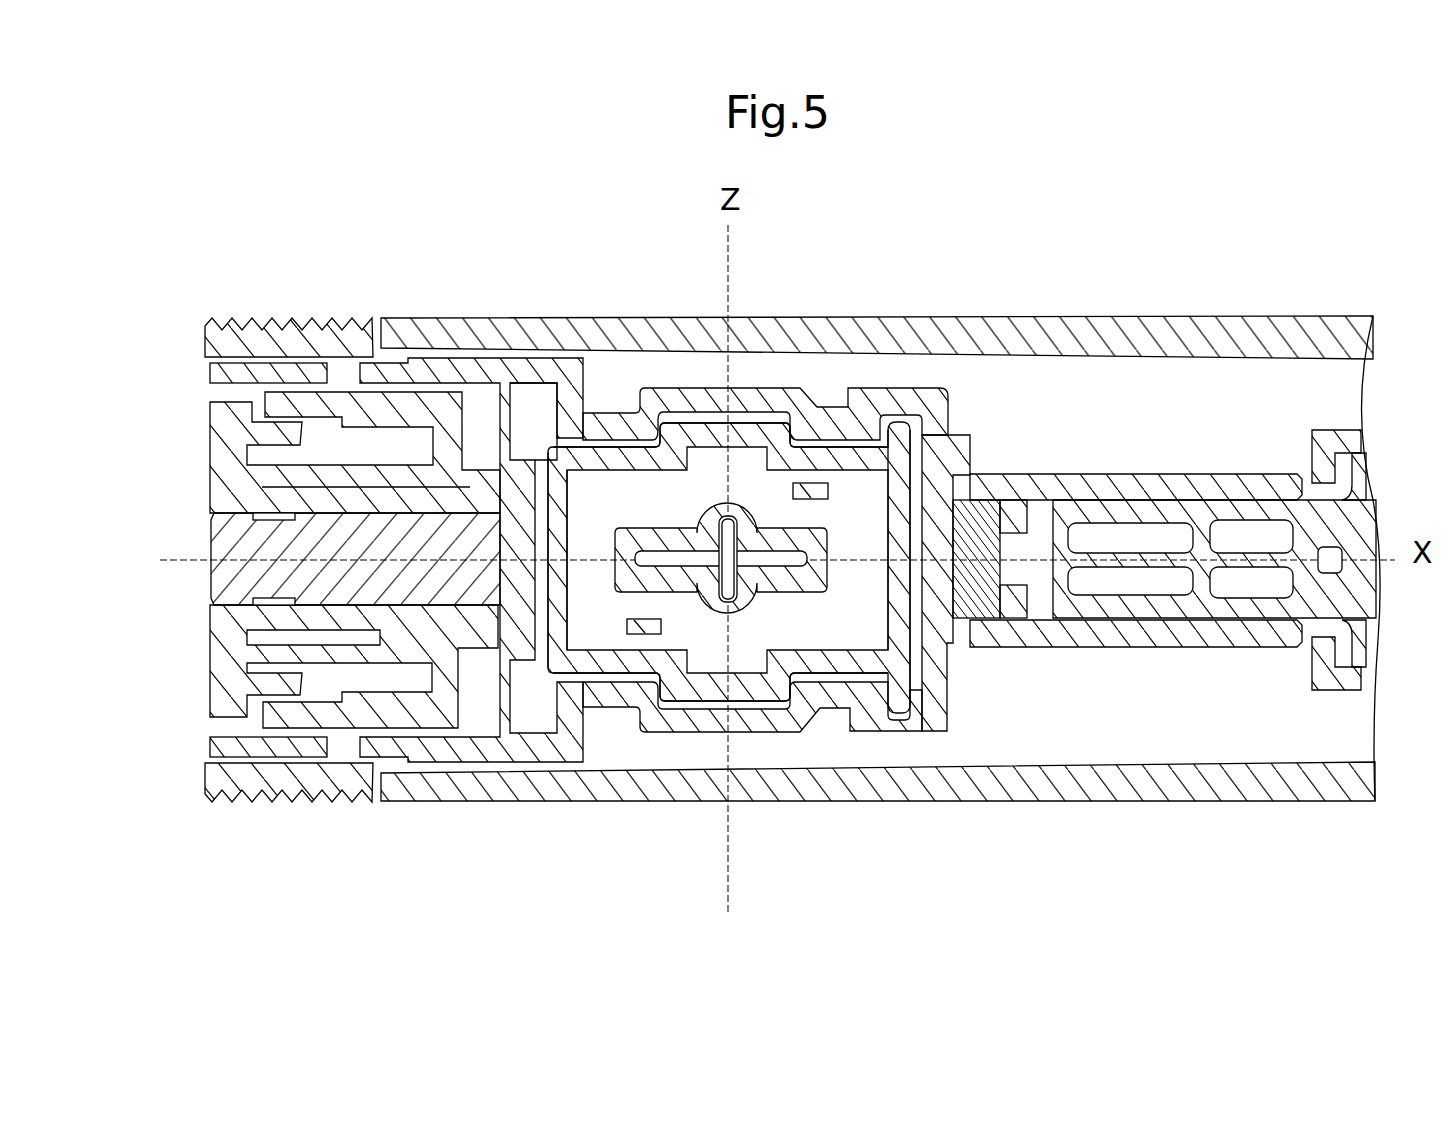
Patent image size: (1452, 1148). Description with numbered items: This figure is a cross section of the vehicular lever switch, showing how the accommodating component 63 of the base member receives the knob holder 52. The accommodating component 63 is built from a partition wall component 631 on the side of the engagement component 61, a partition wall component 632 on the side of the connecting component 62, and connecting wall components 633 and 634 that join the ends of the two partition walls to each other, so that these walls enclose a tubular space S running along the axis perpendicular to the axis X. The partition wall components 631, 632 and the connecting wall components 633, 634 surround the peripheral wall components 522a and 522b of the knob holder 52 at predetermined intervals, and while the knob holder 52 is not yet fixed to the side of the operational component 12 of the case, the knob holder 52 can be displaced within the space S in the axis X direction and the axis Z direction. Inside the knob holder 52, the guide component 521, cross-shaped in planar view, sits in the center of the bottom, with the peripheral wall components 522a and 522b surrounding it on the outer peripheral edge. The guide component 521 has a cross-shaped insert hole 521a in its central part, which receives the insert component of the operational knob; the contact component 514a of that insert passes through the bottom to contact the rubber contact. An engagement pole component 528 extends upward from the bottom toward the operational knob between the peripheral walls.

The operational component 12 is at (1095, 335).
The knob holder 52 is at (699, 603).
The guide component 521 is at (748, 570).
The insert hole 521a is at (678, 558).
The contact component 514a is at (716, 575).
The peripheral wall component 522a is at (613, 457).
The peripheral wall component 522b is at (549, 673).
The engagement pole component 528 is at (793, 492).
The engagement component 61 is at (1108, 476).
The connecting component 62 is at (252, 545).
The accommodating component 63 is at (665, 536).
The partition wall component 631 is at (943, 470).
The partition wall component 632 is at (523, 470).
The connecting wall component 633 is at (666, 400).
The connecting wall component 634 is at (752, 713).
The tubular space S is at (542, 385).